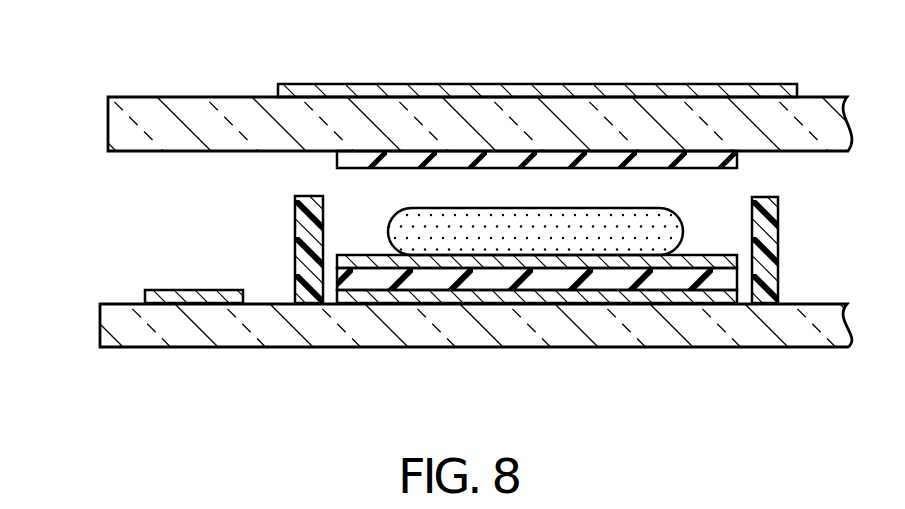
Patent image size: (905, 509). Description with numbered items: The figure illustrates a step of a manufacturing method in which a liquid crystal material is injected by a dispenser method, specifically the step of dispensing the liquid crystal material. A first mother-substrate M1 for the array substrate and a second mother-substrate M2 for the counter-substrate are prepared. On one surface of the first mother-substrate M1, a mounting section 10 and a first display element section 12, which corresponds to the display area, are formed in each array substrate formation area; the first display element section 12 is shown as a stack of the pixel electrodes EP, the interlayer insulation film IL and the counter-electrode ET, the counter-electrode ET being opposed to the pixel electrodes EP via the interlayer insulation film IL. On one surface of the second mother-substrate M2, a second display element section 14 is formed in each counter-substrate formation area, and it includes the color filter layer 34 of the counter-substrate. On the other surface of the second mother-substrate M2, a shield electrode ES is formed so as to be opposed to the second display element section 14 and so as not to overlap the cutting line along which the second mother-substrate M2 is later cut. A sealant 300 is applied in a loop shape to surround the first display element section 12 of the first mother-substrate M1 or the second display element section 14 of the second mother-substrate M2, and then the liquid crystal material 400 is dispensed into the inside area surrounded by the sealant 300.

The first mother-substrate M1 is at (100, 322).
The second mother-substrate M2 is at (108, 118).
The first display element section 12 is at (440, 298).
The second display element section 14 is at (438, 113).
The mounting section 10 is at (193, 290).
The color filter layer 34 is at (650, 160).
The shield electrode ES is at (549, 92).
The sealant 300 is at (302, 217).
The liquid crystal material 400 is at (453, 222).
The pixel electrode EP is at (380, 262).
The interlayer insulation film IL is at (444, 280).
The counter-electrode ET is at (498, 296).